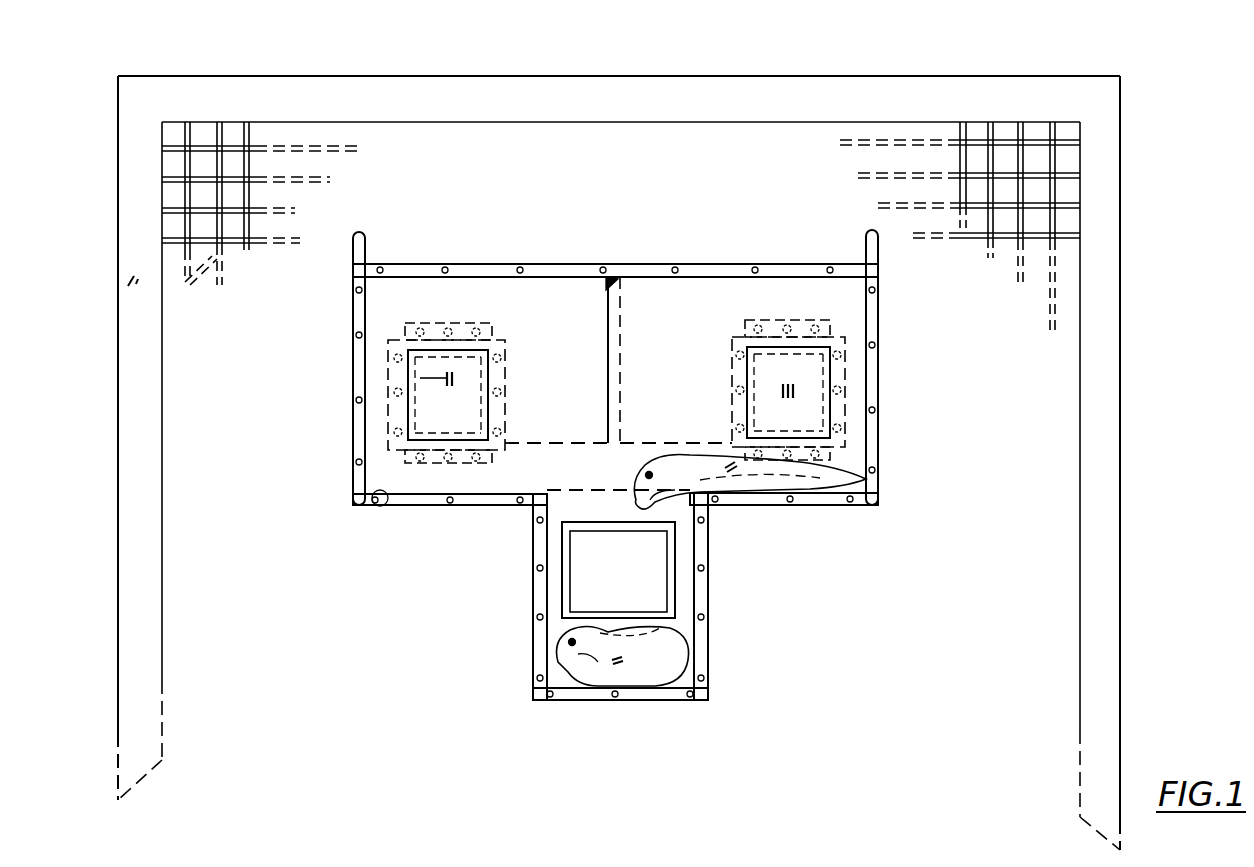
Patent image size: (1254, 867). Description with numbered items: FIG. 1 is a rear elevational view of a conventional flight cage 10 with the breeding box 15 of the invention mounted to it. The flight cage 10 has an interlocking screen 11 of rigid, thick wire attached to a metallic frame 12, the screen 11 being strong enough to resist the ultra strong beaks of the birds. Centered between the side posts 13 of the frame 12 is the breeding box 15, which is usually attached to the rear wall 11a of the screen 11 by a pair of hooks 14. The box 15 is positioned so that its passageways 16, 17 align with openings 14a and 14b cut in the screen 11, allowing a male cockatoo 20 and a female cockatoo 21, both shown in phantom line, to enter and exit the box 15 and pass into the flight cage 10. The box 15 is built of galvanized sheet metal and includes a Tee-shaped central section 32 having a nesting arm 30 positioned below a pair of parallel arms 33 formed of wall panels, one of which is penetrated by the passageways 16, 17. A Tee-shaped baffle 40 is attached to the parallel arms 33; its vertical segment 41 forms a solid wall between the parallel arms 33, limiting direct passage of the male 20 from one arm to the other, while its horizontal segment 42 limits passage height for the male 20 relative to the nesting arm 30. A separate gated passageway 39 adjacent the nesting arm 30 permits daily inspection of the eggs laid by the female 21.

The flight cage 10 is at (147, 64).
The interlocking screen 11 is at (176, 171).
The rear wall 11a is at (185, 280).
The metallic frame 12 is at (116, 208).
The side posts 13 is at (125, 282).
The hooks 14 is at (351, 261).
The opening 14a is at (470, 348).
The opening 14b is at (735, 342).
The breeding box 15 is at (496, 258).
The passageway 16 is at (420, 378).
The passageway 17 is at (795, 392).
The male cockatoo 20 is at (733, 471).
The female cockatoo 21 is at (616, 667).
The nesting arm 30 is at (533, 673).
The Tee-shaped central section 32 is at (528, 619).
The parallel arms 33 is at (388, 500).
The gated passageway 39 is at (674, 586).
The Tee-shaped baffle 40 is at (604, 270).
The vertical segment 41 is at (621, 328).
The horizontal segment 42 is at (590, 450).